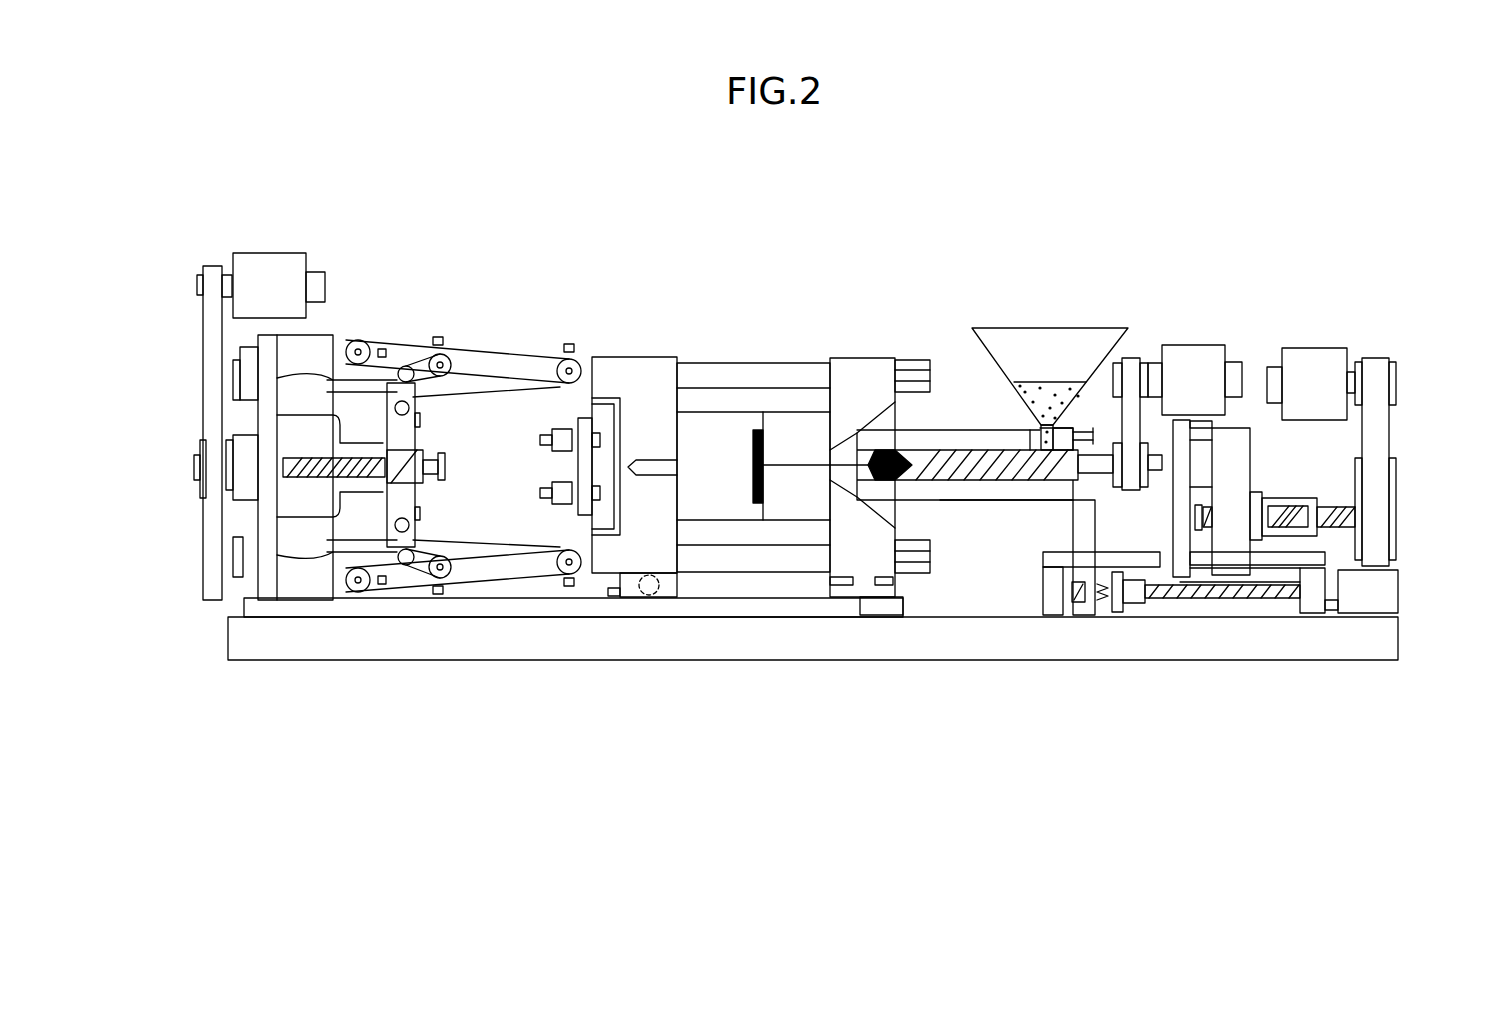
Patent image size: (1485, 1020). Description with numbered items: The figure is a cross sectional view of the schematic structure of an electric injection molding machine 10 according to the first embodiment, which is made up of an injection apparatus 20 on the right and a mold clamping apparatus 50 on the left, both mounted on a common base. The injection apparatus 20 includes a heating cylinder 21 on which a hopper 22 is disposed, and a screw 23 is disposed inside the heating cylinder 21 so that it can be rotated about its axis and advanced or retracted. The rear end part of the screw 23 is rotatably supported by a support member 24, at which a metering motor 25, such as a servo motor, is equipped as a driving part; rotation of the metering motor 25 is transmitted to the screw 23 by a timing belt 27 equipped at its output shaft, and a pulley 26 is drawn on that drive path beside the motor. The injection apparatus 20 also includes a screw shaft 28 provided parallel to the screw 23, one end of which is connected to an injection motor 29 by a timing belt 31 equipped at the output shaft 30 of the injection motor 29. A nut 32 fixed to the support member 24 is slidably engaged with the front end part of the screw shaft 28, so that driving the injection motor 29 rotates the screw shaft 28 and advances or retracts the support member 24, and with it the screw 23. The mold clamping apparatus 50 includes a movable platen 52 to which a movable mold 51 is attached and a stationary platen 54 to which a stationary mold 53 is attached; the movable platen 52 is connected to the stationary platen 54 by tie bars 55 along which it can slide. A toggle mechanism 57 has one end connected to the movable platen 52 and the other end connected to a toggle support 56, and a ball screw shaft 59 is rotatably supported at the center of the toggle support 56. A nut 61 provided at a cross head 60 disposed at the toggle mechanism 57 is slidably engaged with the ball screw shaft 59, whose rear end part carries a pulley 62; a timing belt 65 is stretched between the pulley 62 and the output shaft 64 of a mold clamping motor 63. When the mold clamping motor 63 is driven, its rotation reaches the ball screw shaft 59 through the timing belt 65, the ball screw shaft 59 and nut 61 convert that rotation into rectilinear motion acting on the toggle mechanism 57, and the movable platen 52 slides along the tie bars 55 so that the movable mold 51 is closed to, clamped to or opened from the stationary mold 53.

The electric injection molding machine 10 is at (166, 137).
The injection apparatus 20 is at (930, 432).
The heating cylinder 21 is at (983, 428).
The hopper 22 is at (1047, 328).
The screw 23 is at (967, 485).
The support member 24 is at (1214, 435).
The metering motor 25 is at (1190, 345).
The pulley 26 is at (1148, 365).
The timing belt 27 is at (1118, 413).
The screw shaft 28 is at (1323, 527).
The injection motor 29 is at (1312, 348).
The output shaft 30 is at (1351, 370).
The timing belt 31 is at (1396, 432).
The nut 32 is at (1257, 493).
The mold clamping apparatus 50 is at (305, 334).
The movable mold 51 is at (725, 412).
The movable platen 52 is at (647, 357).
The stationary mold 53 is at (793, 412).
The stationary platen 54 is at (873, 358).
The tie bars 55 is at (692, 363).
The toggle support 56 is at (245, 583).
The toggle mechanism 57 is at (480, 353).
The ball screw shaft 59 is at (385, 437).
The cross head 60 is at (392, 473).
The nut 61 is at (408, 495).
The pulley 62 is at (200, 487).
The mold clamping motor 63 is at (270, 252).
The output shaft 64 is at (227, 272).
The timing belt 65 is at (203, 390).